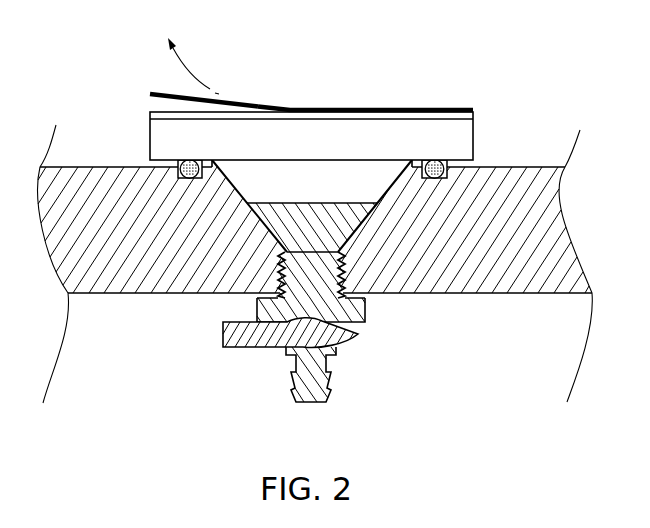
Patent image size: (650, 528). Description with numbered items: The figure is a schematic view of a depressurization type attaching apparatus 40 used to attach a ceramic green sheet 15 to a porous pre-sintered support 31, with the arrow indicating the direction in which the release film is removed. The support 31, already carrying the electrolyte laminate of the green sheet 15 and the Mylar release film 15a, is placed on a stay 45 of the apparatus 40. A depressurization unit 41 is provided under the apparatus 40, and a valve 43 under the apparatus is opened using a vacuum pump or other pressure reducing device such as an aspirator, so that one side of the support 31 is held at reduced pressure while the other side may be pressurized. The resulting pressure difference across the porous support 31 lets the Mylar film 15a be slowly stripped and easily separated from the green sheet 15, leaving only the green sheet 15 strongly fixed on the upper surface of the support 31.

The green sheet 15 is at (468, 115).
The release film (Mylar film) 15a is at (257, 103).
The support (porous) 31 is at (457, 140).
The depressurization type attaching apparatus 40 is at (545, 152).
The depressurization unit 41 is at (388, 305).
The valve 43 is at (247, 337).
The stay 45 is at (247, 178).